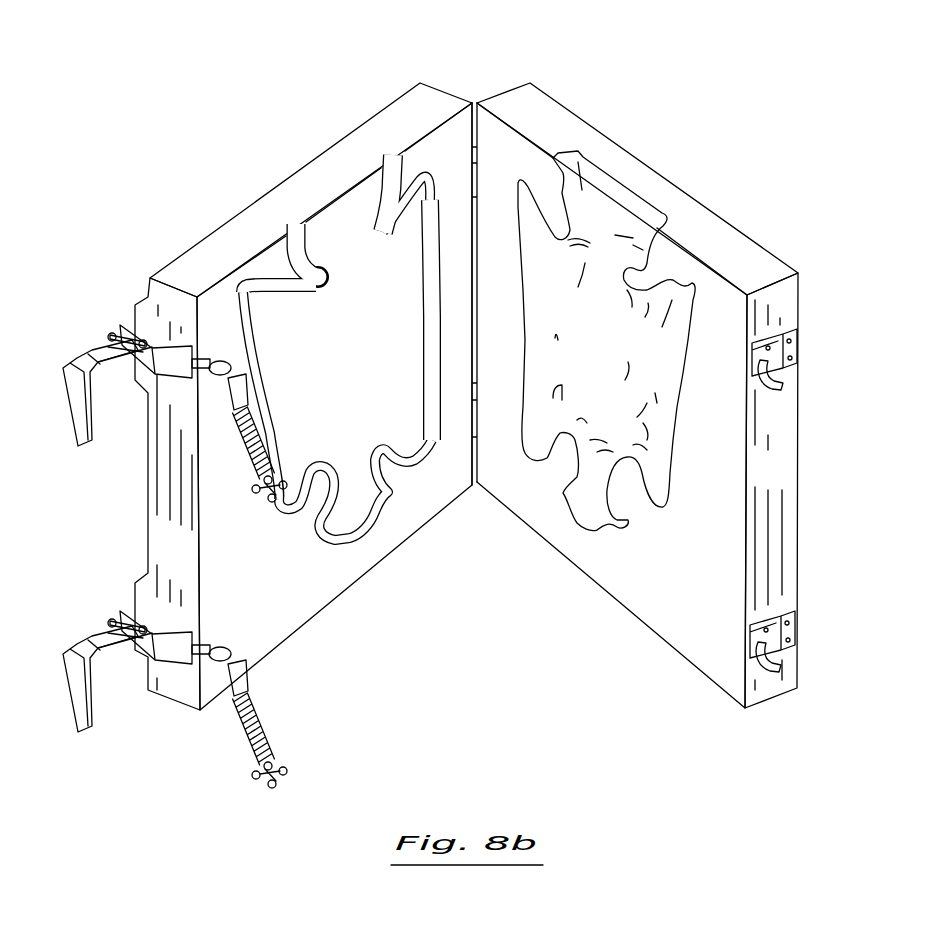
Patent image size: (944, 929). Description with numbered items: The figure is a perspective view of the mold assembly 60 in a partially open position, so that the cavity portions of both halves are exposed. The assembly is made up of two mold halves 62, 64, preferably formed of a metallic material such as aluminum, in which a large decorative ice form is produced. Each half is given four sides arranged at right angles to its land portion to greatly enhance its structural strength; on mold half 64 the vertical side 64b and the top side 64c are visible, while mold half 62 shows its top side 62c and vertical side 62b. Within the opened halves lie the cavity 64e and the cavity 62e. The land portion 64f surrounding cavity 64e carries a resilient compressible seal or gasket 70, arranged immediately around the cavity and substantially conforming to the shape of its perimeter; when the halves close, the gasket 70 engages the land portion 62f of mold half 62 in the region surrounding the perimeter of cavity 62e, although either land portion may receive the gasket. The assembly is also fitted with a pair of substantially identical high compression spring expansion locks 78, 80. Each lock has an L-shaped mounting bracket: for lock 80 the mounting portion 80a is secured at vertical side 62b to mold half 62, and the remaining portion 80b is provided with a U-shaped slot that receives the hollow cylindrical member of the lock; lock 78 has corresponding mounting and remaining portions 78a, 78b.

The mold assembly 60 is at (500, 37).
The mold half 62 is at (697, 192).
The vertical side 62b is at (792, 477).
The top side 62c is at (562, 125).
The cavity 62e is at (625, 345).
The land portion 62f is at (550, 520).
The mold half 64 is at (426, 80).
The vertical side 64b is at (172, 535).
The top side 64c is at (395, 125).
The cavity 64e is at (337, 347).
The land portion 64f is at (282, 613).
The resilient compressible gasket 70 is at (273, 433).
The high compression spring expansion lock 78 is at (63, 439).
The mounting portion 78a is at (782, 335).
The remaining portion 78b is at (772, 392).
The high compression spring expansion lock 80 is at (175, 699).
The mounting portion 80a is at (814, 615).
The remaining portion 80b is at (795, 683).